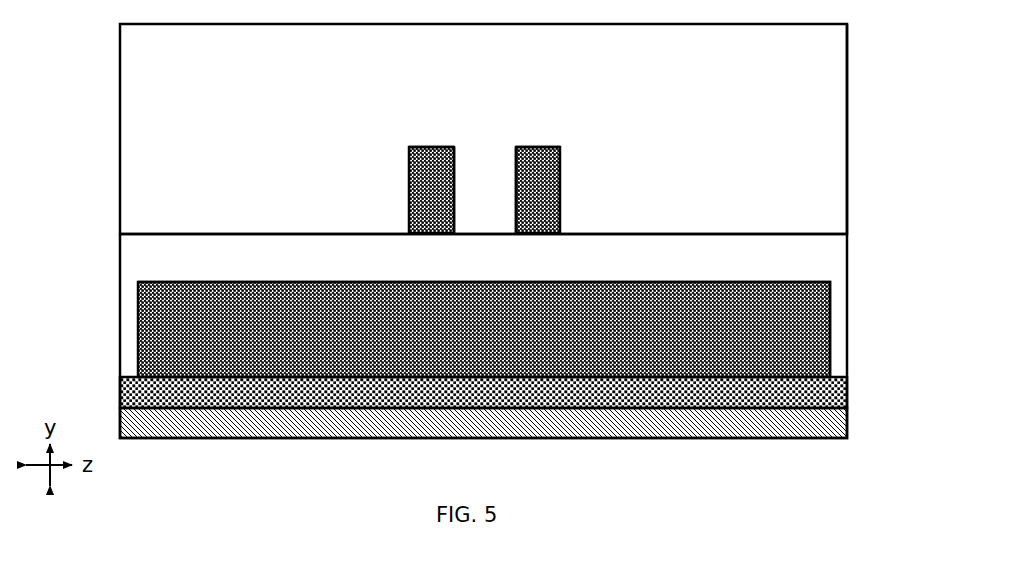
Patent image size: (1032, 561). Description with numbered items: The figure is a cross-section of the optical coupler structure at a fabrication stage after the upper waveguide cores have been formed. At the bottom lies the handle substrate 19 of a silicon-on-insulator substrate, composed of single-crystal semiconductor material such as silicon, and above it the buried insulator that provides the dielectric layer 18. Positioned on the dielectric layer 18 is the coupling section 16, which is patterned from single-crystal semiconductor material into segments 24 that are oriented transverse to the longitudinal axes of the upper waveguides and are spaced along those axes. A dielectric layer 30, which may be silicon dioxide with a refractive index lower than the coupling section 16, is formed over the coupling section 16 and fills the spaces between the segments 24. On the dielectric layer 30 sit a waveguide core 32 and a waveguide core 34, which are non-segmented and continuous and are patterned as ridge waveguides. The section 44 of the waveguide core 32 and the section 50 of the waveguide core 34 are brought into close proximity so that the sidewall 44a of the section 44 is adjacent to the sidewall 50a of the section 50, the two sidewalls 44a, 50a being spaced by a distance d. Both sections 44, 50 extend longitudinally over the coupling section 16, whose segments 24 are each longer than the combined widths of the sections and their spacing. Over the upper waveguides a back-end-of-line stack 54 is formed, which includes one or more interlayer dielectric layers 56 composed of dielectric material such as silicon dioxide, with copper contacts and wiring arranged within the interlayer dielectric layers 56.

The coupling section 16 is at (833, 341).
The dielectric layer 18 is at (140, 395).
The handle substrate 19 is at (816, 427).
The segments 24 is at (162, 333).
The dielectric layer 30 is at (141, 254).
The waveguide core 32 is at (429, 145).
The waveguide core 34 is at (541, 145).
The section 44 is at (424, 172).
The sidewall 44a is at (453, 198).
The section 50 is at (542, 165).
The sidewall 50a is at (515, 217).
The back-end-of-line stack 54 is at (118, 130).
The interlayer dielectric layers 56 is at (790, 166).